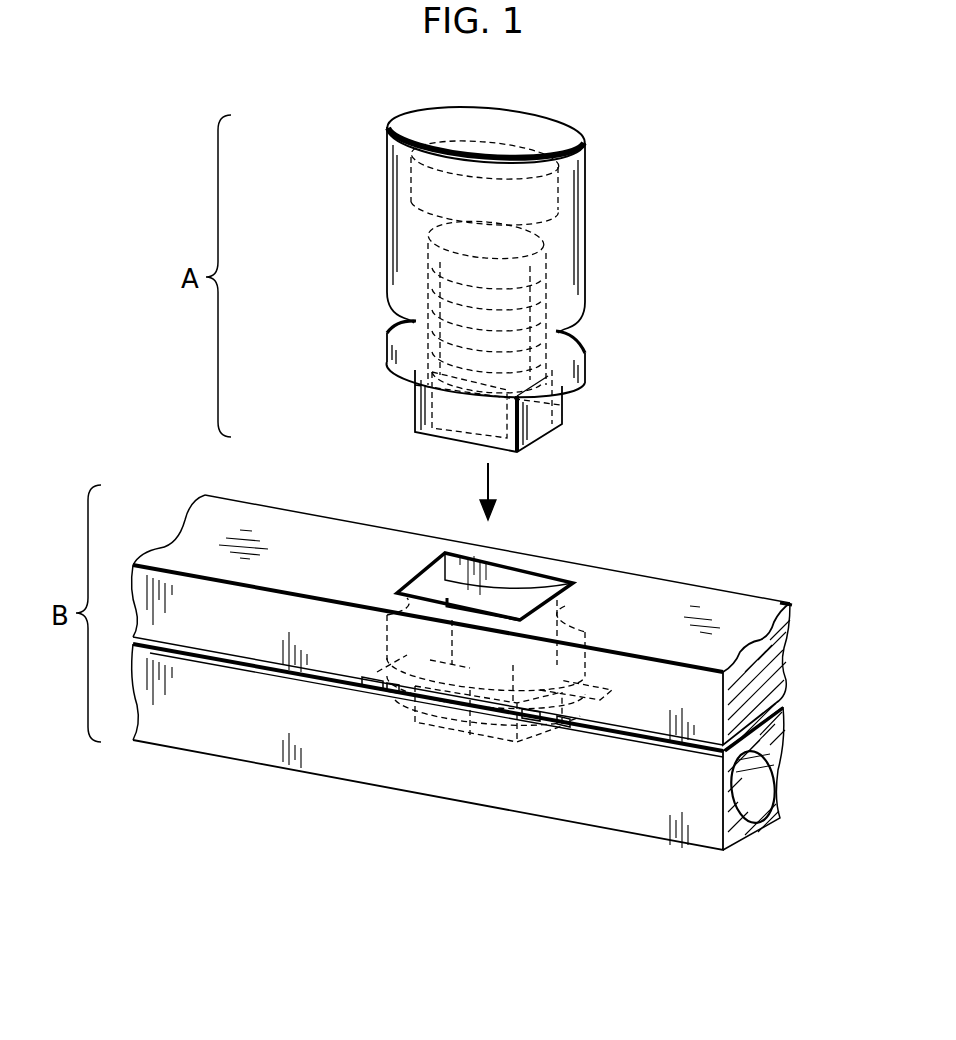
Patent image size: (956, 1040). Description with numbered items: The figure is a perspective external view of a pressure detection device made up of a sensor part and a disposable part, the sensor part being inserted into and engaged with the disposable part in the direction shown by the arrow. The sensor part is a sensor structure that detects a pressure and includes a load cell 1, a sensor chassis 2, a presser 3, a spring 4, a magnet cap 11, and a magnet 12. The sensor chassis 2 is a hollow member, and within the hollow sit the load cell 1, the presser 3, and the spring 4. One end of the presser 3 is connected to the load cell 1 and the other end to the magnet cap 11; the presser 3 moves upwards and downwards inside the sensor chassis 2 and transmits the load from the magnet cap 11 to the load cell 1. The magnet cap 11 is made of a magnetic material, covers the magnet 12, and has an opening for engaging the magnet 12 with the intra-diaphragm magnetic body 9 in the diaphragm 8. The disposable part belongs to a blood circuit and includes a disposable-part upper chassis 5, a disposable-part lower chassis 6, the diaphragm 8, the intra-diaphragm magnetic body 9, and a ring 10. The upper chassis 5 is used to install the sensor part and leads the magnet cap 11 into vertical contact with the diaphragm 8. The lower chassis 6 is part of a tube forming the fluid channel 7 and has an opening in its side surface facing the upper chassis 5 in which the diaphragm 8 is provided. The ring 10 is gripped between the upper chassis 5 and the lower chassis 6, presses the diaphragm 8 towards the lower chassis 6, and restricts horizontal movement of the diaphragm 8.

The load cell 1 is at (402, 186).
The sensor chassis 2 is at (587, 193).
The presser 3 is at (560, 247).
The spring 4 is at (586, 311).
The disposable-part upper chassis 5 is at (788, 645).
The disposable-part lower chassis 6 is at (783, 750).
The fluid channel 7 is at (748, 798).
The diaphragm 8 is at (470, 722).
The intra-diaphragm magnetic body 9 is at (567, 660).
The ring 10 is at (375, 692).
The magnet cap 11 is at (554, 428).
The magnet 12 is at (562, 404).